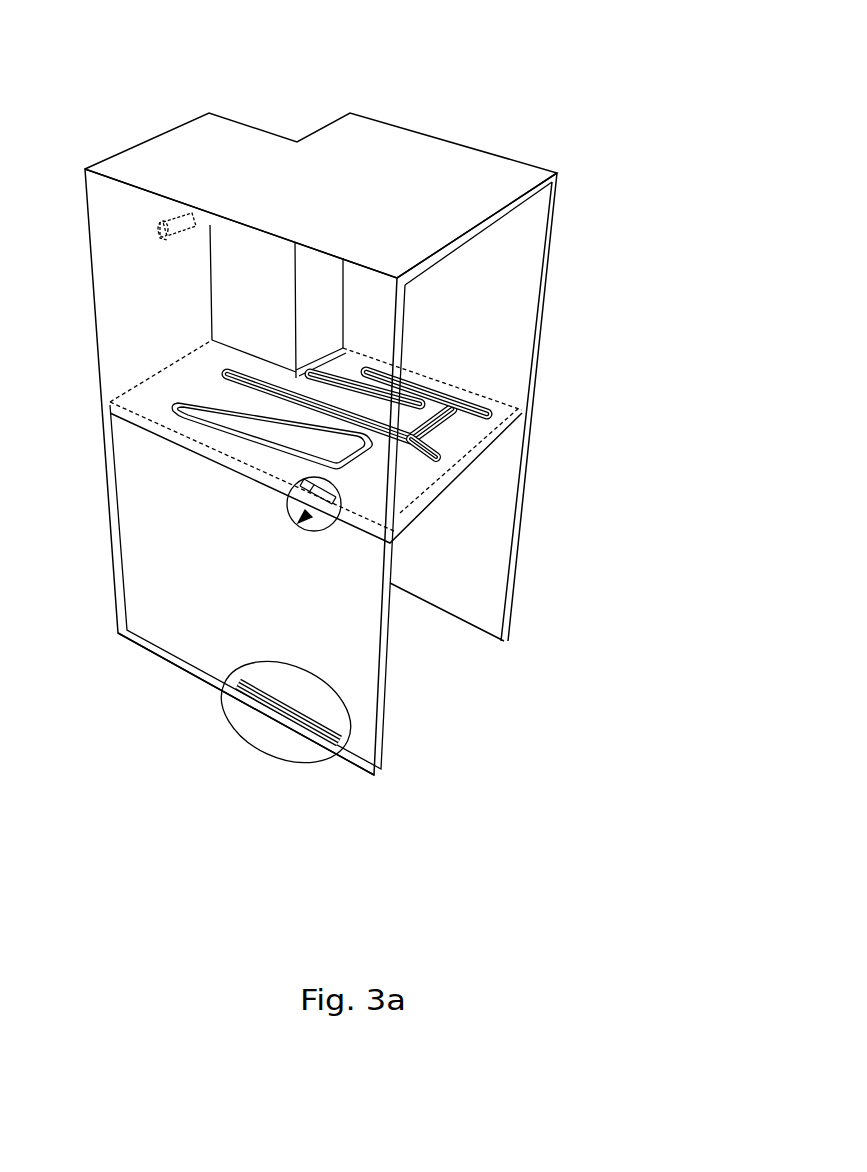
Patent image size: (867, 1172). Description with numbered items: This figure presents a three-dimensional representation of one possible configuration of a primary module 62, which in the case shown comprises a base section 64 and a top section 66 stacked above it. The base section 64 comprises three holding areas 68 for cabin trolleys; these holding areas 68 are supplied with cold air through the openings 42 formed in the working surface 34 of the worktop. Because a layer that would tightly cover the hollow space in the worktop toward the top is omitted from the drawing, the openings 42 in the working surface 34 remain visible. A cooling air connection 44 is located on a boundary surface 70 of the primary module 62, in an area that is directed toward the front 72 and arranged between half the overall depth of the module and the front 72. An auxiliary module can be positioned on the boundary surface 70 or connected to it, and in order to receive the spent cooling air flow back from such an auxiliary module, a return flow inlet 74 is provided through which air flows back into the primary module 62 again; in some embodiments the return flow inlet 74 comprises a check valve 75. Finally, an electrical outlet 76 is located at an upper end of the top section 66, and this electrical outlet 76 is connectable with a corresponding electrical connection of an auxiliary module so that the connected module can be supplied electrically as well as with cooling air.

The working surface 34 is at (458, 446).
The openings 42 is at (214, 398).
The cooling air connection 44 is at (298, 530).
The primary module 62 is at (606, 346).
The base section 64 is at (545, 422).
The top section 66 is at (573, 177).
The holding areas 68 is at (441, 662).
The boundary surface 70 is at (188, 556).
The front 72 is at (556, 150).
The return flow inlet 74 is at (236, 723).
The check valve 75 is at (290, 743).
The electrical outlet 76 is at (210, 226).